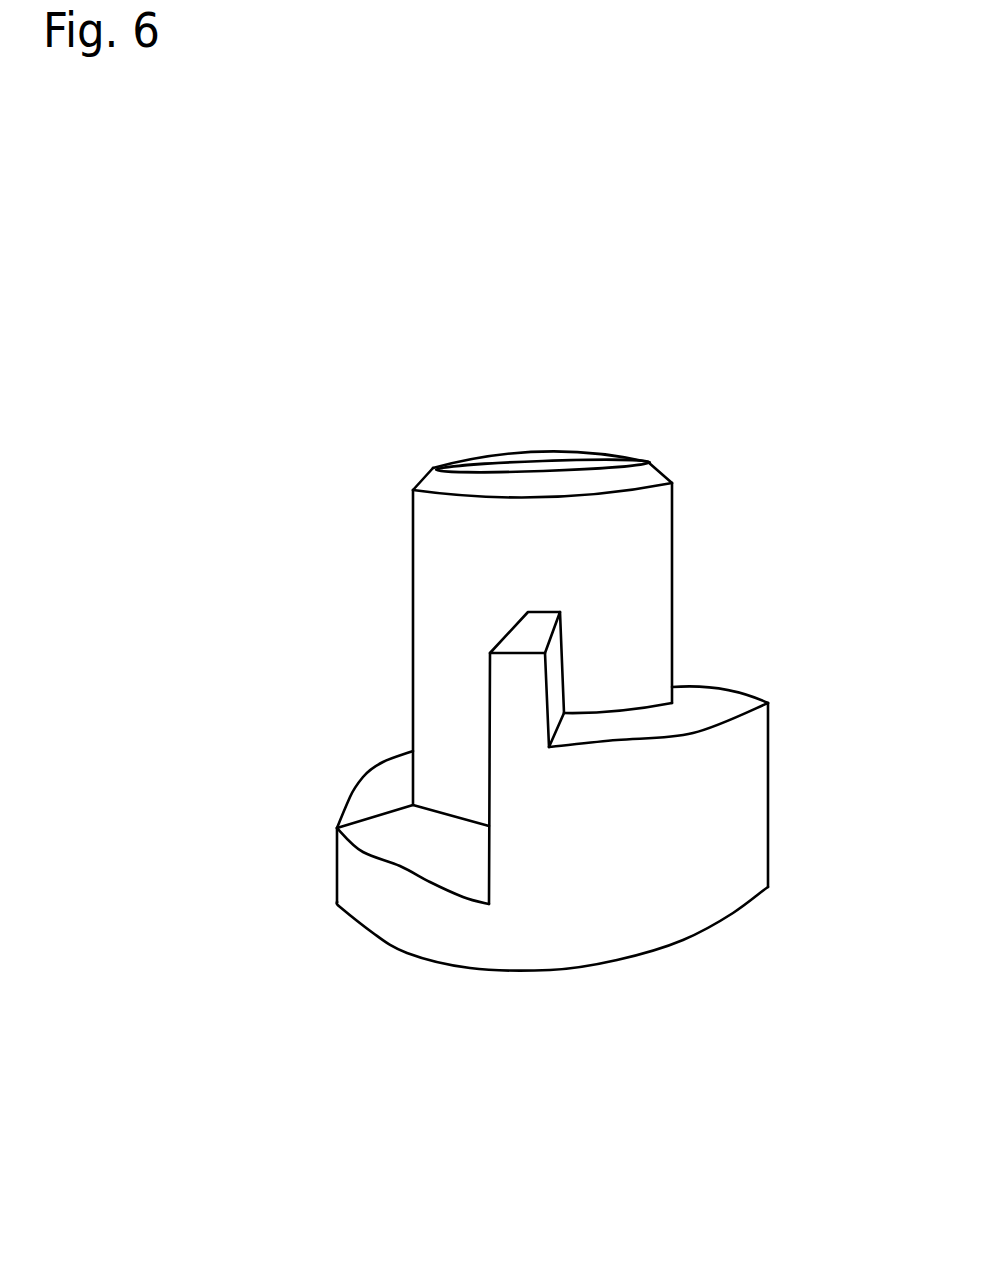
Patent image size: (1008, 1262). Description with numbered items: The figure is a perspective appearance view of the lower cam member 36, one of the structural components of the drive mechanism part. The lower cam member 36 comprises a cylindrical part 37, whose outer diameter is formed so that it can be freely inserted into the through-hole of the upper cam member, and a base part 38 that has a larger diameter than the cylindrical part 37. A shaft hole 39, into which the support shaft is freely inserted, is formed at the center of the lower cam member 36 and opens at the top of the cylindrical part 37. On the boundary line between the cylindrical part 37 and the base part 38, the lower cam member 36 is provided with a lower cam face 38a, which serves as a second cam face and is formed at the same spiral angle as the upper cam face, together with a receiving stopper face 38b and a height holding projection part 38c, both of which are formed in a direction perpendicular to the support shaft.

The lower cam member 36 is at (700, 438).
The cylindrical part 37 is at (450, 542).
The base part 38 is at (747, 788).
The lower cam face 38a is at (373, 793).
The receiving stopper face 38b is at (403, 852).
The height holding projection part 38c is at (512, 692).
The shaft hole 39 is at (555, 468).